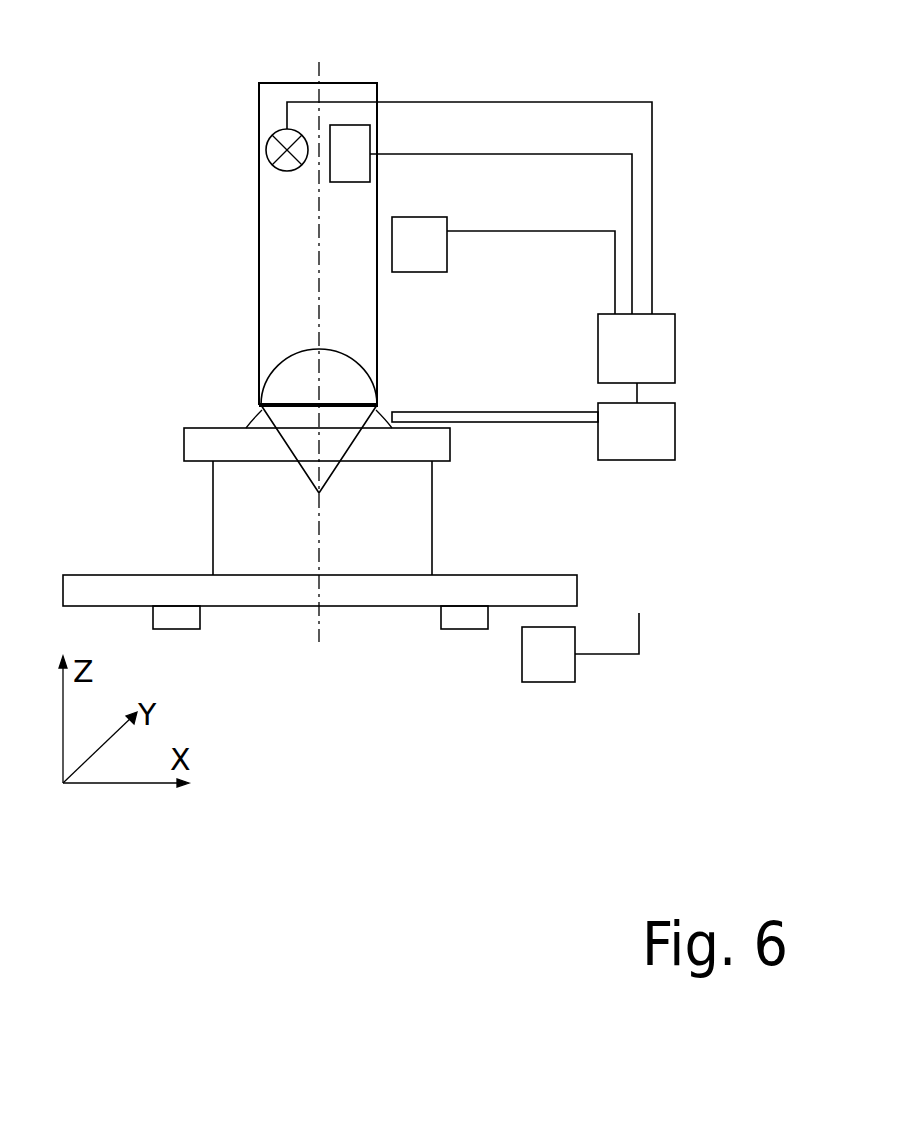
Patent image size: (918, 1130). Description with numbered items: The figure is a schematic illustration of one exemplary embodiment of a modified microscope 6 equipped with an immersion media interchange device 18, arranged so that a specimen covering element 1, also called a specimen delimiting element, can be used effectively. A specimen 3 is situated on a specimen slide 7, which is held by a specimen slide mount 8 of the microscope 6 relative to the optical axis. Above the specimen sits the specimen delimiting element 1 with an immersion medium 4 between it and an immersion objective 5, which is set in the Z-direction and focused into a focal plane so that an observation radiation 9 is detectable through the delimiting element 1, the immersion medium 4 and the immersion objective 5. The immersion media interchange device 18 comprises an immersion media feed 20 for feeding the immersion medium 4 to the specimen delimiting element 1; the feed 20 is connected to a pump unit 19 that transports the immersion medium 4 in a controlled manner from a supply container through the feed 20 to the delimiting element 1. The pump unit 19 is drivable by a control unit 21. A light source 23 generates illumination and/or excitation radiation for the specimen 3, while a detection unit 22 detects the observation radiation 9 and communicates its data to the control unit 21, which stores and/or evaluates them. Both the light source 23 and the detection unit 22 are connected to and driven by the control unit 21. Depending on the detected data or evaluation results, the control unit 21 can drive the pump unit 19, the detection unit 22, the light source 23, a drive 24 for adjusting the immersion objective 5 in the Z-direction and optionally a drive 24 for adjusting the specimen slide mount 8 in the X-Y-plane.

The specimen covering element 1 is at (205, 445).
The specimen 3 is at (247, 483).
The immersion medium 4 is at (258, 418).
The immersion objective 5 is at (287, 372).
The microscope 6 is at (202, 116).
The specimen slide 7 is at (83, 582).
The specimen slide mount 8 is at (452, 620).
The observation radiation 9 is at (381, 408).
The immersion media interchange device 18 is at (663, 417).
The pump unit 19 is at (619, 446).
The immersion media feed 20 is at (490, 424).
The control unit 21 is at (619, 367).
The detection unit 22 is at (352, 163).
The light source 23 is at (281, 162).
The drive 24 is at (428, 245).